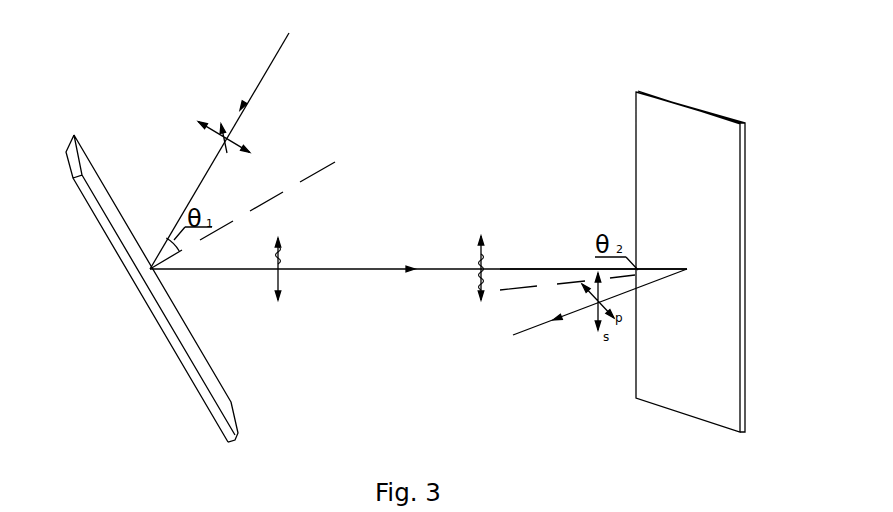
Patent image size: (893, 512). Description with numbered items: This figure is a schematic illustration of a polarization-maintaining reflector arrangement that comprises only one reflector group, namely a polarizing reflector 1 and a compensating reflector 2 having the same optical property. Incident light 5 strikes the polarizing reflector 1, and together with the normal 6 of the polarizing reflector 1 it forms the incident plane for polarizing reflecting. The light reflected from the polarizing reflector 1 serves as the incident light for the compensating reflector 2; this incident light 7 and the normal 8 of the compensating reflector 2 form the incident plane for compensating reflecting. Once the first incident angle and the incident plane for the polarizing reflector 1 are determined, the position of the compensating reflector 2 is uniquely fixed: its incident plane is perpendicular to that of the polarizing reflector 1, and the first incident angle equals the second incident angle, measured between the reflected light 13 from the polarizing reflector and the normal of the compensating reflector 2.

The polarizing reflector 1 is at (112, 205).
The compensating reflector 2 is at (648, 202).
The incident light 5 is at (270, 68).
The normal of polarizing reflector 6 is at (302, 183).
The incident light 7 is at (538, 268).
The normal of compensating reflector 8 is at (478, 295).
The reflected light 13 is at (215, 270).